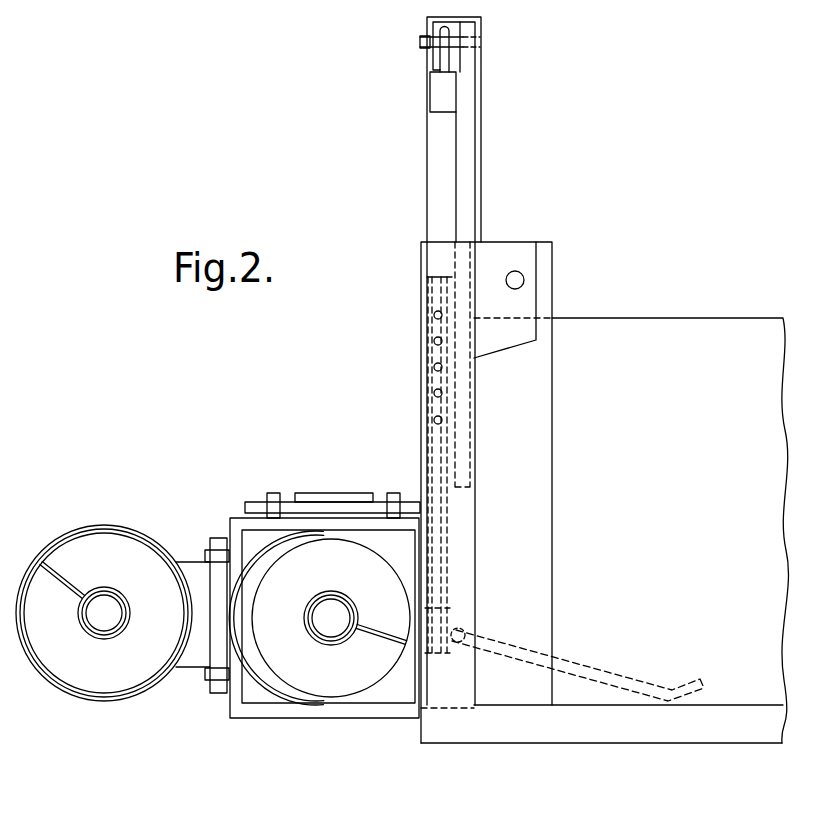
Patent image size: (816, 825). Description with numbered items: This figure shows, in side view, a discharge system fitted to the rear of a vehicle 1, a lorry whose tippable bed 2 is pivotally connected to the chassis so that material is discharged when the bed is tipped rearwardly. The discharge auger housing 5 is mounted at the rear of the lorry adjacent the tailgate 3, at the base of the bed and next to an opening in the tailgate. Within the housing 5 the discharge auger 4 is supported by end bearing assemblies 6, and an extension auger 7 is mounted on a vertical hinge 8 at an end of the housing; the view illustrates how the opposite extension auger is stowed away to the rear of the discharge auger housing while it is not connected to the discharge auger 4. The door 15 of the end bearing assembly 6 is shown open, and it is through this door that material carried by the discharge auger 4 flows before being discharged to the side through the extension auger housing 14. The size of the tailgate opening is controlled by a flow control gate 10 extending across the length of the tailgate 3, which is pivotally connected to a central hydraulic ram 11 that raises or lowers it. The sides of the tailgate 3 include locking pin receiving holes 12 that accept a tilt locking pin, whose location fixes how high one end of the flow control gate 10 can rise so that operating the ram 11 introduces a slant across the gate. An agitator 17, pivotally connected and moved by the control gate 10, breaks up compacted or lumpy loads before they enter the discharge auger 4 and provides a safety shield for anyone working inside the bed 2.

The vehicle 1 is at (670, 326).
The tippable bed 2 is at (647, 724).
The tailgate 3 is at (522, 242).
The discharge auger 4 is at (332, 680).
The housing 5 is at (259, 704).
The end bearing assembly 6 is at (328, 496).
The extension auger 7 is at (86, 672).
The vertical hinge 8 is at (208, 690).
The flow control gate 10 is at (432, 477).
The central hydraulic ram 11 is at (427, 166).
The locking pin receiving holes 12 is at (442, 420).
The extension auger housing 14 is at (108, 527).
The door 15 is at (248, 497).
The agitator 17 is at (592, 668).